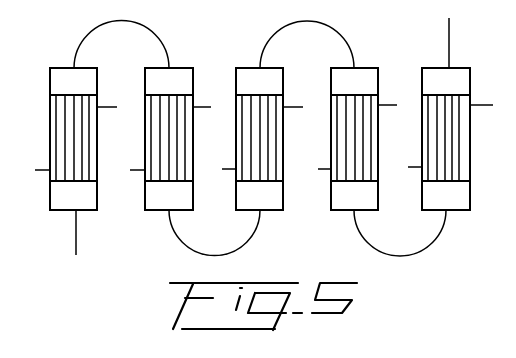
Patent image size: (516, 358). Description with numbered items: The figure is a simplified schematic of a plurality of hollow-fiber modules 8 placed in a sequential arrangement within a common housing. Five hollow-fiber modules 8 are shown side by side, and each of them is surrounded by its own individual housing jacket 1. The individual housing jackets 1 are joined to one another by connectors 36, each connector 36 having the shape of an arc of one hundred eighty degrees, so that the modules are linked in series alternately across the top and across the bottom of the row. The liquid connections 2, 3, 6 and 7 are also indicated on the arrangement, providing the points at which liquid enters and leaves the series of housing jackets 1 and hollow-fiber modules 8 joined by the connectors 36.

The housing jacket 1 is at (470, 194).
The liquid connection 2 is at (46, 170).
The liquid connection 3 is at (488, 105).
The liquid connection 6 is at (449, 40).
The liquid connection 7 is at (76, 243).
The hollow-fiber module 8 is at (455, 152).
The connector 36 is at (403, 255).